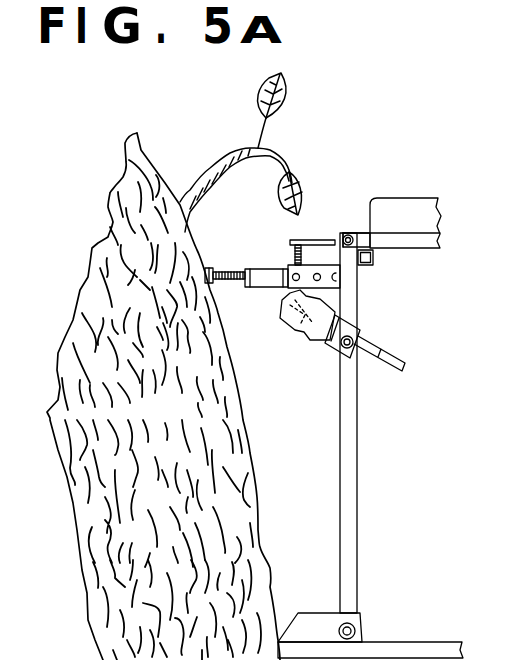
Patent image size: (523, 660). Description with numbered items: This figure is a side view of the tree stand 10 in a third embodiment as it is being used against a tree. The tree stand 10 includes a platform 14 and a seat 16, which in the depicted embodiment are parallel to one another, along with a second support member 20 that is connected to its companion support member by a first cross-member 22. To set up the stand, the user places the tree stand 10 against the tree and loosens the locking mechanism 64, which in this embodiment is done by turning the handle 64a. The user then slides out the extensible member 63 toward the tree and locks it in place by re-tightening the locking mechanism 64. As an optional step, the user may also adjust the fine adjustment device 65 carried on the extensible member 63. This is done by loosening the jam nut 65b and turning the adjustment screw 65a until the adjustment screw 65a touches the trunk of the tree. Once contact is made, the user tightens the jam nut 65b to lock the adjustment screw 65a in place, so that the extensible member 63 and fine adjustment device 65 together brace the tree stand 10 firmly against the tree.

The tree stand 10 is at (385, 166).
The platform 14 is at (396, 642).
The seat 16 is at (417, 198).
The second support member 20 is at (357, 380).
The first cross-member 22 is at (373, 263).
The extensible member 63 is at (285, 266).
The locking mechanism 64 is at (313, 201).
The handle 64a is at (305, 240).
The fine adjustment device 65 is at (233, 214).
The adjustment screw 65a is at (212, 266).
The jam nut 65b is at (244, 289).